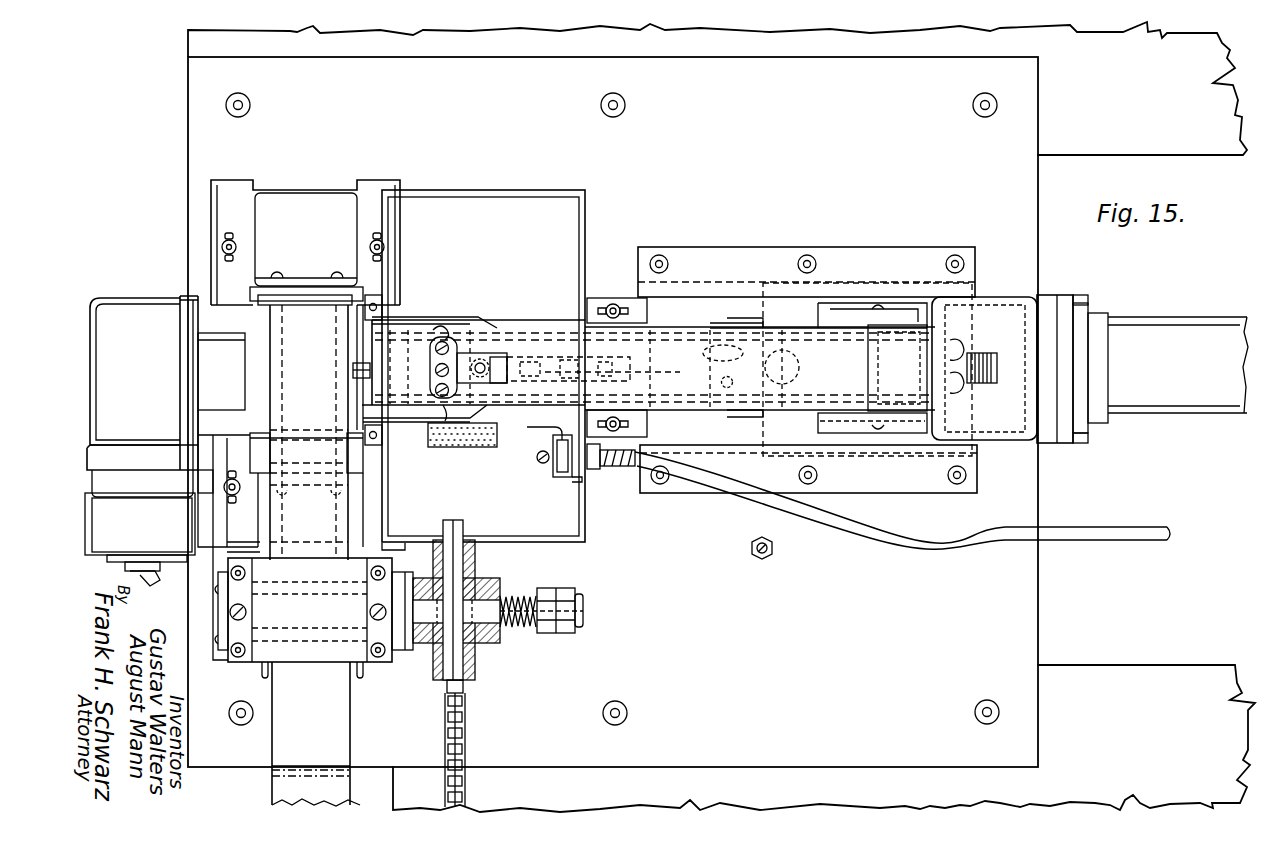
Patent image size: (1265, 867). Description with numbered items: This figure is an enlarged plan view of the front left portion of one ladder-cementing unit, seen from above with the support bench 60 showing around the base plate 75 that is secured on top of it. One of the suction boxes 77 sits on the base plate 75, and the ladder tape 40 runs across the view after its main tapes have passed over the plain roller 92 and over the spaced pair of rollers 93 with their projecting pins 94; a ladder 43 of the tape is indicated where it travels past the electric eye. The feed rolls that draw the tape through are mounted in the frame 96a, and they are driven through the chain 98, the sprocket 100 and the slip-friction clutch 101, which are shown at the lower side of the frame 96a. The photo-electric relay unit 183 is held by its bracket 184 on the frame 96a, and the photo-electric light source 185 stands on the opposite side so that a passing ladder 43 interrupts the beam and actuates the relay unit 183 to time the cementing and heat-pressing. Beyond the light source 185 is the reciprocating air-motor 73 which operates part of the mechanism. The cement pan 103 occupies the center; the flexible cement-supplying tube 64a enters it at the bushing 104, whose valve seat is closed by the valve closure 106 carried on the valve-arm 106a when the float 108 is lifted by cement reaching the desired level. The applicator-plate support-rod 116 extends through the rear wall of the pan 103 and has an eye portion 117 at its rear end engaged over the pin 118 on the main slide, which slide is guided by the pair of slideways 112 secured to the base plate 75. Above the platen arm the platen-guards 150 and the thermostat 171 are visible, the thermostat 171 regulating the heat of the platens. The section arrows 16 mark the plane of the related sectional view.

The support bench 60 is at (190, 42).
The base plate 75 is at (203, 148).
The suction box 77 is at (318, 202).
The cement pan 103 is at (465, 190).
The photo-electric relay unit 183 is at (150, 302).
The bracket 184 is at (222, 548).
The section line 16 is at (137, 372).
The ladder 43 is at (322, 397).
The rollers 93 is at (338, 326).
The projecting pins 94 is at (336, 350).
The ladder tape 40 is at (350, 746).
The plain roller 92 is at (264, 432).
The frame 96a is at (330, 618).
The slip-friction clutch 101 is at (475, 666).
The sprocket 100 is at (463, 690).
The chain 98 is at (466, 746).
The applicator-plate support-rod 116 is at (682, 365).
The platen-guards 150 is at (428, 318).
The thermostat 171 is at (470, 350).
The float 108 is at (476, 443).
The valve-arm 106a is at (528, 432).
The valve closure 106 is at (556, 472).
The bushing 104 is at (578, 484).
The flexible cement-supplying tube 64a is at (888, 538).
The slideways 112 is at (888, 232).
The pin 118 is at (782, 350).
The eye portion 117 is at (783, 396).
The photo-electric light source 185 is at (1022, 432).
The reciprocating air-motor 73 is at (1172, 402).